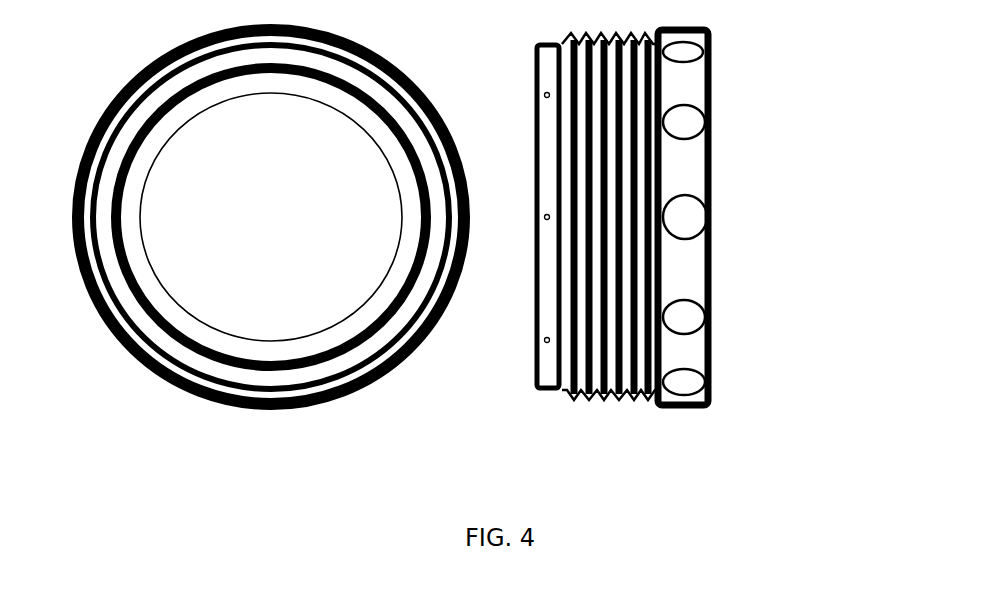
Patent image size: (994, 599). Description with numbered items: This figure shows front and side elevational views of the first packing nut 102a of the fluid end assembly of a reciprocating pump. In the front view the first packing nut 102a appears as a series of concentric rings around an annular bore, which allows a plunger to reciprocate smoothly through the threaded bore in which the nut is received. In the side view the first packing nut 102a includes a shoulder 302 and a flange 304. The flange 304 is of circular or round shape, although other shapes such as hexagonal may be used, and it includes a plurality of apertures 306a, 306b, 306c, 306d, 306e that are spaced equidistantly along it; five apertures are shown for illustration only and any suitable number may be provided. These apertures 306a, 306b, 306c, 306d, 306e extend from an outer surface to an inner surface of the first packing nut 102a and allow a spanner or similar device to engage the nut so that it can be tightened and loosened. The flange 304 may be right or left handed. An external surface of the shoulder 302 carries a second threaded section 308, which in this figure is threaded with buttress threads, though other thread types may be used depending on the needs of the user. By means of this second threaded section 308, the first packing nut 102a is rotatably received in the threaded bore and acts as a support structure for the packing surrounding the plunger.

The first packing nut 102a is at (455, 84).
The shoulder 302 is at (589, 422).
The flange 304 is at (685, 411).
The aperture 306a is at (708, 55).
The aperture 306b is at (708, 124).
The aperture 306c is at (708, 218).
The aperture 306d is at (708, 314).
The aperture 306e is at (708, 383).
The second threaded section 308 is at (563, 393).